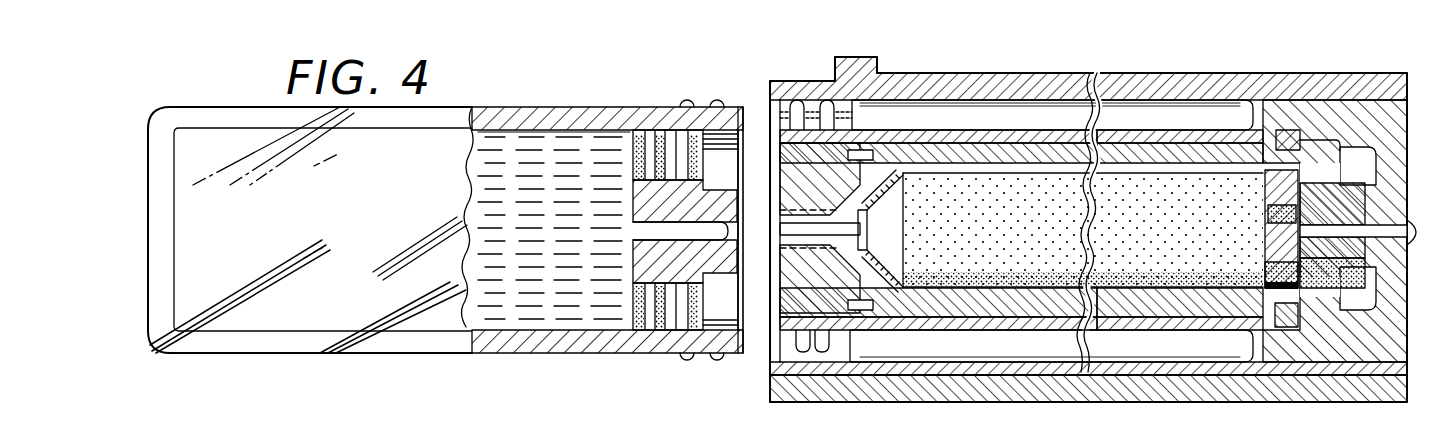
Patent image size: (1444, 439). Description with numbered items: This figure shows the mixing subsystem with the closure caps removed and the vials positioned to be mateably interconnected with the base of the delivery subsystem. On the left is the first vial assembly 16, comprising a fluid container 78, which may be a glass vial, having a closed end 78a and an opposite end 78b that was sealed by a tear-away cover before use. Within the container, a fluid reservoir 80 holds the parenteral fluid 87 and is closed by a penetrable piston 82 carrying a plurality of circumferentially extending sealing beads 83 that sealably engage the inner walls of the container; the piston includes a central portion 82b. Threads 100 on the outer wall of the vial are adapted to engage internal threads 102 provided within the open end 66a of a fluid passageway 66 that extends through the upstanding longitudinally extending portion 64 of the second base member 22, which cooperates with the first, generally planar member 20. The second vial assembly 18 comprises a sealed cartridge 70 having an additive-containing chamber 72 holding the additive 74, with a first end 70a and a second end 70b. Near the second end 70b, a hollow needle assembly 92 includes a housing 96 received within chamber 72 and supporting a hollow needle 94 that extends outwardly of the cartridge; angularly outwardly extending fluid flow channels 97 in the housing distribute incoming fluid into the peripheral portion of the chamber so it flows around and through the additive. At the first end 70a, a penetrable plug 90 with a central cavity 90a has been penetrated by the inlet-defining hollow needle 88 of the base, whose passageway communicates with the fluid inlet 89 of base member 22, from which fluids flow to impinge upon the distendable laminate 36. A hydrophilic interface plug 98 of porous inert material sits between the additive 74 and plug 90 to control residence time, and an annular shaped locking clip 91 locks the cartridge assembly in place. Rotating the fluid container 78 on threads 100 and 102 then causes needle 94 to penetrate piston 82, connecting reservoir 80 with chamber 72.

The first vial assembly 16 is at (218, 100).
The closed end 78a is at (176, 248).
The fluid container 78 is at (568, 352).
The parenteral fluid 87 is at (586, 140).
The fluid reservoir 80 is at (536, 128).
The penetrable piston 82 is at (662, 130).
The plunger rod 82b is at (646, 228).
The sealing beads 83 is at (660, 332).
The threads 100 is at (716, 362).
The end of the fluid container 78b is at (748, 108).
The distendable laminate 36 is at (1222, 73).
The upstanding longitudinally extending portion 64 is at (1022, 98).
The second end 70b is at (855, 117).
The second vial assembly 18 is at (975, 150).
The sealed cartridge 70 is at (1122, 152).
The additive 74 is at (1000, 230).
The additive-containing chamber 72 is at (1158, 173).
The hollow needle 94 is at (816, 222).
The housing 96 is at (826, 279).
The hollow needle assembly 92 is at (880, 232).
The fluid flow channels 97 is at (882, 206).
The open end 66a is at (843, 344).
The internal threads 102 is at (806, 353).
The fluid passageway 66 is at (1002, 362).
The first generally planar member 20 is at (1182, 390).
The second cooperating member 22 is at (1372, 352).
The first end 70a is at (1385, 138).
The hydrophilic interface plug 98 is at (1266, 190).
The hollow needle 88 is at (1300, 235).
The central cavity 90a is at (1270, 215).
The penetrable plug 90 is at (1270, 260).
The fluid inlet 89 is at (1372, 198).
The annular shaped locking clip 91 is at (1290, 328).